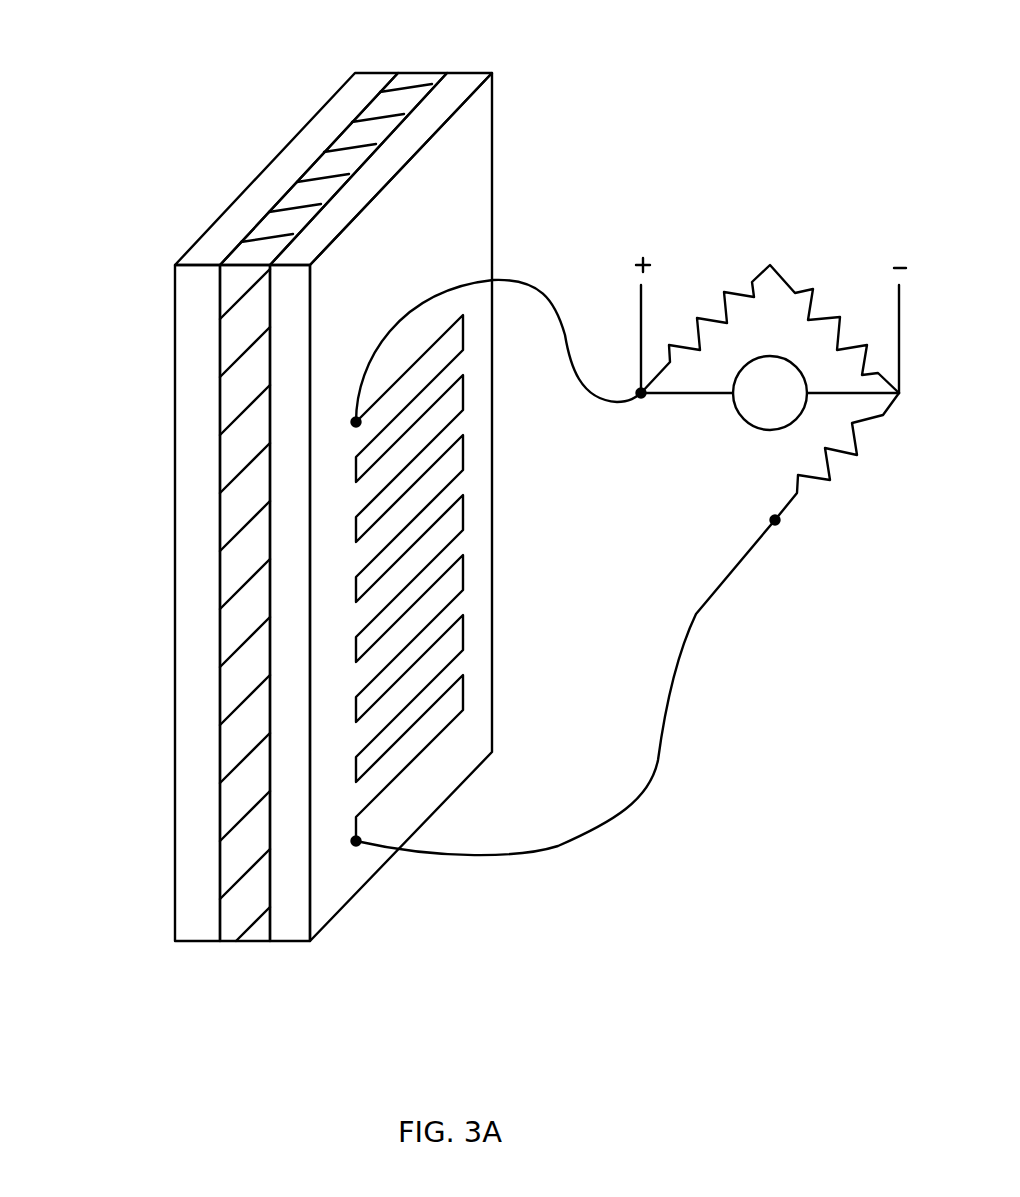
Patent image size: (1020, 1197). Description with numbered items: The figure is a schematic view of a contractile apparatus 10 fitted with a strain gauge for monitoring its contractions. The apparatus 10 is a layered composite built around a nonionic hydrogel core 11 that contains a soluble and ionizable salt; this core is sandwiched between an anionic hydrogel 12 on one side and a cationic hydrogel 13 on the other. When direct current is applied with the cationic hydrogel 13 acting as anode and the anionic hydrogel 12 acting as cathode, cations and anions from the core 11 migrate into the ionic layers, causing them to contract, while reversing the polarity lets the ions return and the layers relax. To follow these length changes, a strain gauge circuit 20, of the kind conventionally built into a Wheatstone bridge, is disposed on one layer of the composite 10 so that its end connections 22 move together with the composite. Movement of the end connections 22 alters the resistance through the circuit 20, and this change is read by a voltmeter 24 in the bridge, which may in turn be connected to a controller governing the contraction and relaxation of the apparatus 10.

The contractile apparatus 10 is at (410, 483).
The nonionic hydrogel core 11 is at (410, 80).
The anionic hydrogel 12 is at (310, 150).
The cationic hydrogel 13 is at (450, 107).
The circuit 20 is at (478, 568).
The end connections 22 is at (356, 422).
The voltmeter 24 is at (745, 428).